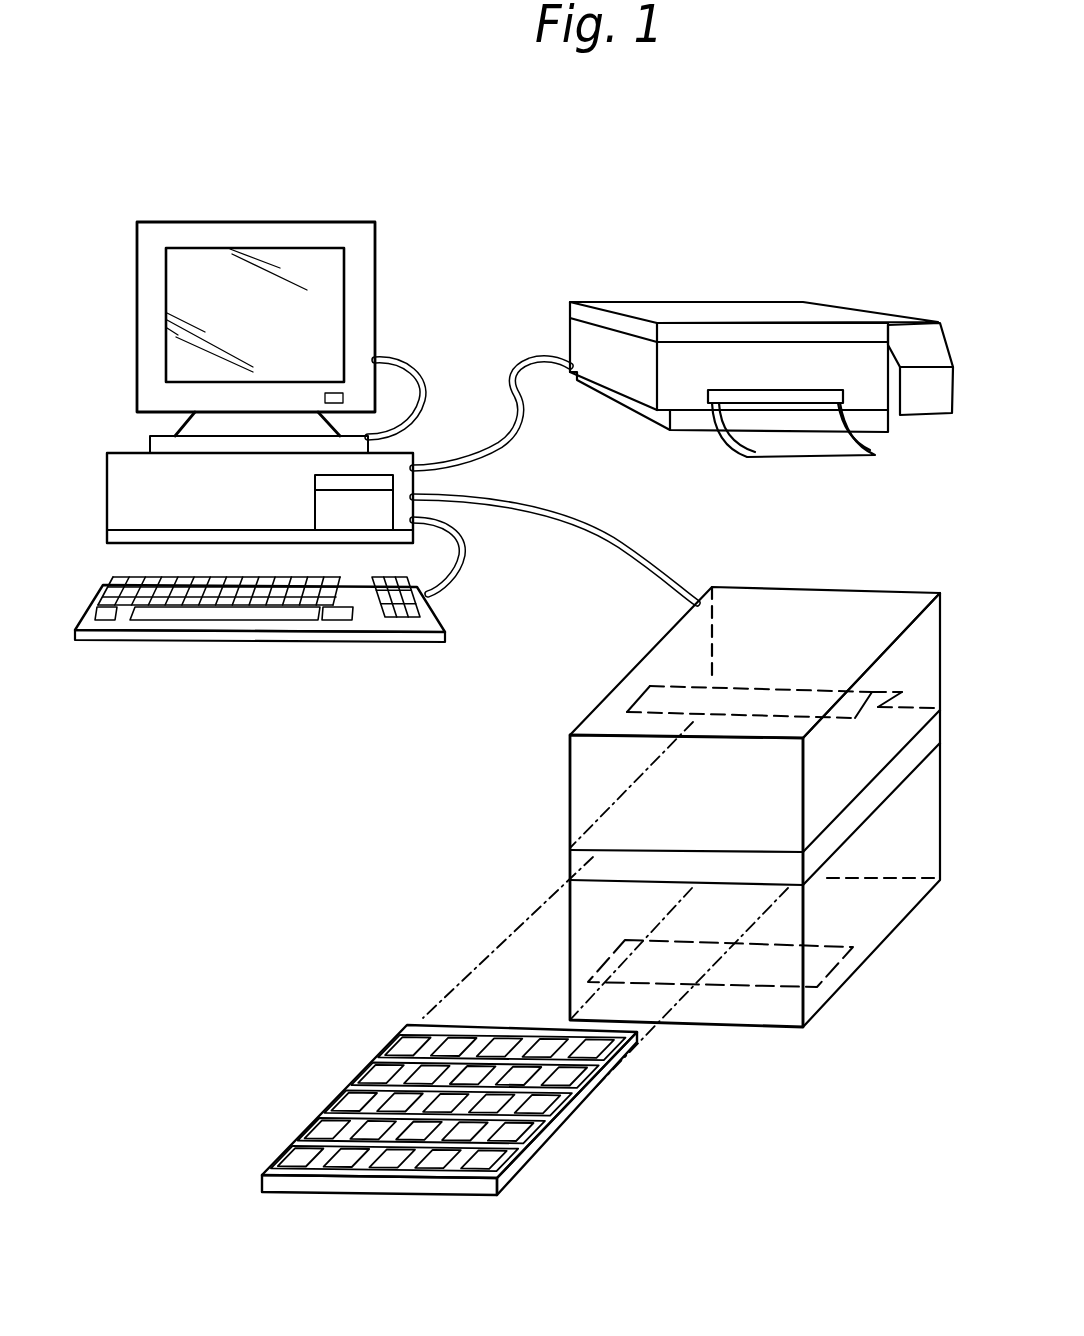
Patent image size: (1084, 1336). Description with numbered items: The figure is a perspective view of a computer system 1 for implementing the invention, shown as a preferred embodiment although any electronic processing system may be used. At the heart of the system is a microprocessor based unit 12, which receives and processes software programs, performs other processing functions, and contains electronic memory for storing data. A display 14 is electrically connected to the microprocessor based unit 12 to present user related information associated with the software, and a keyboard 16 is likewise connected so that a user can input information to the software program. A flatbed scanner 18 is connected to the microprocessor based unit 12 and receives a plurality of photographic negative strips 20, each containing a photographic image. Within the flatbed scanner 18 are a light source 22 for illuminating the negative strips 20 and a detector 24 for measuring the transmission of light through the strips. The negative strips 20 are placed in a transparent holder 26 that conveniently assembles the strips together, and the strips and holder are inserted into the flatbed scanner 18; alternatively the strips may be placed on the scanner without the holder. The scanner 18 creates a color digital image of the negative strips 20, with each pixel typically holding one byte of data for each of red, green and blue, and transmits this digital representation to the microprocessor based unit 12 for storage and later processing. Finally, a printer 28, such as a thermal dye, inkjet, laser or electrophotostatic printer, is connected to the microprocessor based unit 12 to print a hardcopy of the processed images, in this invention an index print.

The computer system 1 is at (432, 128).
The microprocessor based unit 12 is at (122, 453).
The display 14 is at (272, 222).
The keyboard 16 is at (190, 642).
The flatbed scanner 18 is at (722, 652).
The photographic negative strips 20 is at (448, 1035).
The light source 22 is at (640, 703).
The detector 24 is at (772, 990).
The transparent holder 26 is at (590, 1088).
The printer 28 is at (630, 300).